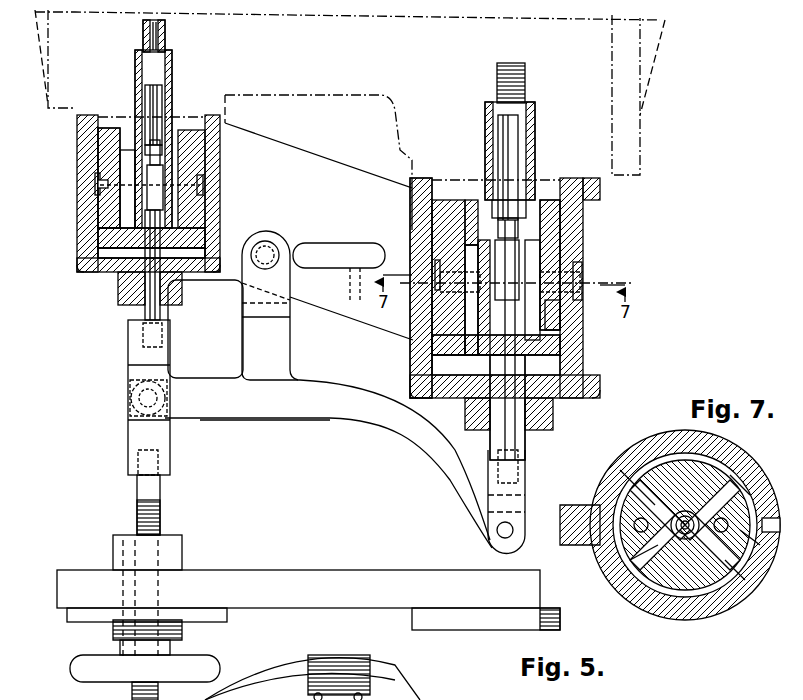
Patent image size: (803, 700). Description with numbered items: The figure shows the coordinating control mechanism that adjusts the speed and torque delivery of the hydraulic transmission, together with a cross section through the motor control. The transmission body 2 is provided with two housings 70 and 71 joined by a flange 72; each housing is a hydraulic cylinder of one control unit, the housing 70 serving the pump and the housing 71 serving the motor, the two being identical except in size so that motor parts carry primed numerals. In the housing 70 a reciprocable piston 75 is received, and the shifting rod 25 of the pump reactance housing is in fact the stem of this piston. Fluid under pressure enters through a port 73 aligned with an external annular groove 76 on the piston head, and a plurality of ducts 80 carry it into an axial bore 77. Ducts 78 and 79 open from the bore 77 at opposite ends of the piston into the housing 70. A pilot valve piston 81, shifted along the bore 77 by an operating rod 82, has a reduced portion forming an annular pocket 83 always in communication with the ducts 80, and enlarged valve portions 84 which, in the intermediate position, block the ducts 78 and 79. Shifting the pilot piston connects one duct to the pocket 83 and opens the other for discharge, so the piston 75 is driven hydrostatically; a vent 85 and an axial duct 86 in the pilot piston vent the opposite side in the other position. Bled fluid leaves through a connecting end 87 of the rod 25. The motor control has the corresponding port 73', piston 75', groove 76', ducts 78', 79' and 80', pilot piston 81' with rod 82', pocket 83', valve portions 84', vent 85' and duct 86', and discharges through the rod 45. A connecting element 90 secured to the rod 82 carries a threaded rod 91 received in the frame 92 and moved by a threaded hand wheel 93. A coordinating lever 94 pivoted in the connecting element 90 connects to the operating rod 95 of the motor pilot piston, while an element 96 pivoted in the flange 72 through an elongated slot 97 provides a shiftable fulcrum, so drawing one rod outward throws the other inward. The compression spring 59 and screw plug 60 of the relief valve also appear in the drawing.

In FIG. 5, the body 2 is at (335, 88).
In FIG. 5, the shifting rod 25 is at (172, 72).
In FIG. 5, the rod 45 is at (535, 140).
In FIG. 5, the compression spring 59 is at (405, 678).
In FIG. 5, the screw plug 60 is at (370, 660).
In FIG. 5, the housing 70 is at (98, 190).
In FIG. 5, the housing 71 is at (412, 368).
In FIG. 7, the housing 71 is at (622, 455).
In FIG. 5, the flange 72 is at (352, 312).
In FIG. 7, the flange 72 is at (568, 540).
In FIG. 5, the port 73 is at (57, 186).
In FIG. 5, the port 73' is at (560, 288).
In FIG. 7, the port 73' is at (782, 507).
In FIG. 5, the piston 75 is at (75, 178).
In FIG. 5, the piston 75' is at (599, 253).
In FIG. 7, the piston 75' is at (681, 501).
In FIG. 5, the annular groove 76 is at (85, 189).
In FIG. 5, the annular groove 76' is at (586, 290).
In FIG. 7, the annular groove 76' is at (655, 546).
In FIG. 5, the axial bore 77 is at (158, 108).
In FIG. 5, the duct 78 is at (121, 239).
In FIG. 5, the duct 78' is at (430, 300).
In FIG. 7, the duct 78' is at (609, 526).
In FIG. 5, the duct 79 is at (215, 197).
In FIG. 5, the duct 79' is at (594, 315).
In FIG. 7, the duct 79' is at (763, 530).
In FIG. 5, the ducts 80 is at (182, 162).
In FIG. 5, the ducts 80' is at (528, 278).
In FIG. 7, the ducts 80' is at (621, 587).
In FIG. 5, the pilot valve piston 81 is at (211, 141).
In FIG. 5, the pilot valve piston 81' is at (573, 218).
In FIG. 7, the pilot valve piston 81' is at (674, 603).
In FIG. 5, the operating rod 82 is at (117, 268).
In FIG. 5, the operating rod 82' is at (567, 405).
In FIG. 5, the annular pocket 83 is at (204, 187).
In FIG. 5, the annular pocket 83' is at (570, 263).
In FIG. 7, the annular pocket 83' is at (708, 485).
In FIG. 5, the valve portions 84 is at (159, 210).
In FIG. 5, the valve portions 84' is at (505, 296).
In FIG. 5, the vent 85 is at (120, 265).
In FIG. 5, the vent 85' is at (537, 342).
In FIG. 5, the axial duct 86 is at (201, 127).
In FIG. 5, the axial duct 86' is at (535, 201).
In FIG. 7, the axial duct 86' is at (627, 510).
In FIG. 5, the connecting end 87 is at (158, 52).
In FIG. 5, the connecting element 90 is at (128, 425).
In FIG. 5, the threaded rod 91 is at (137, 510).
In FIG. 5, the frame 92 is at (88, 572).
In FIG. 5, the hand wheel 93 is at (80, 660).
In FIG. 5, the coordinating lever 94 is at (225, 420).
In FIG. 5, the operating rod 95 is at (520, 488).
In FIG. 5, the element 96 is at (250, 342).
In FIG. 5, the slot 97 is at (312, 268).